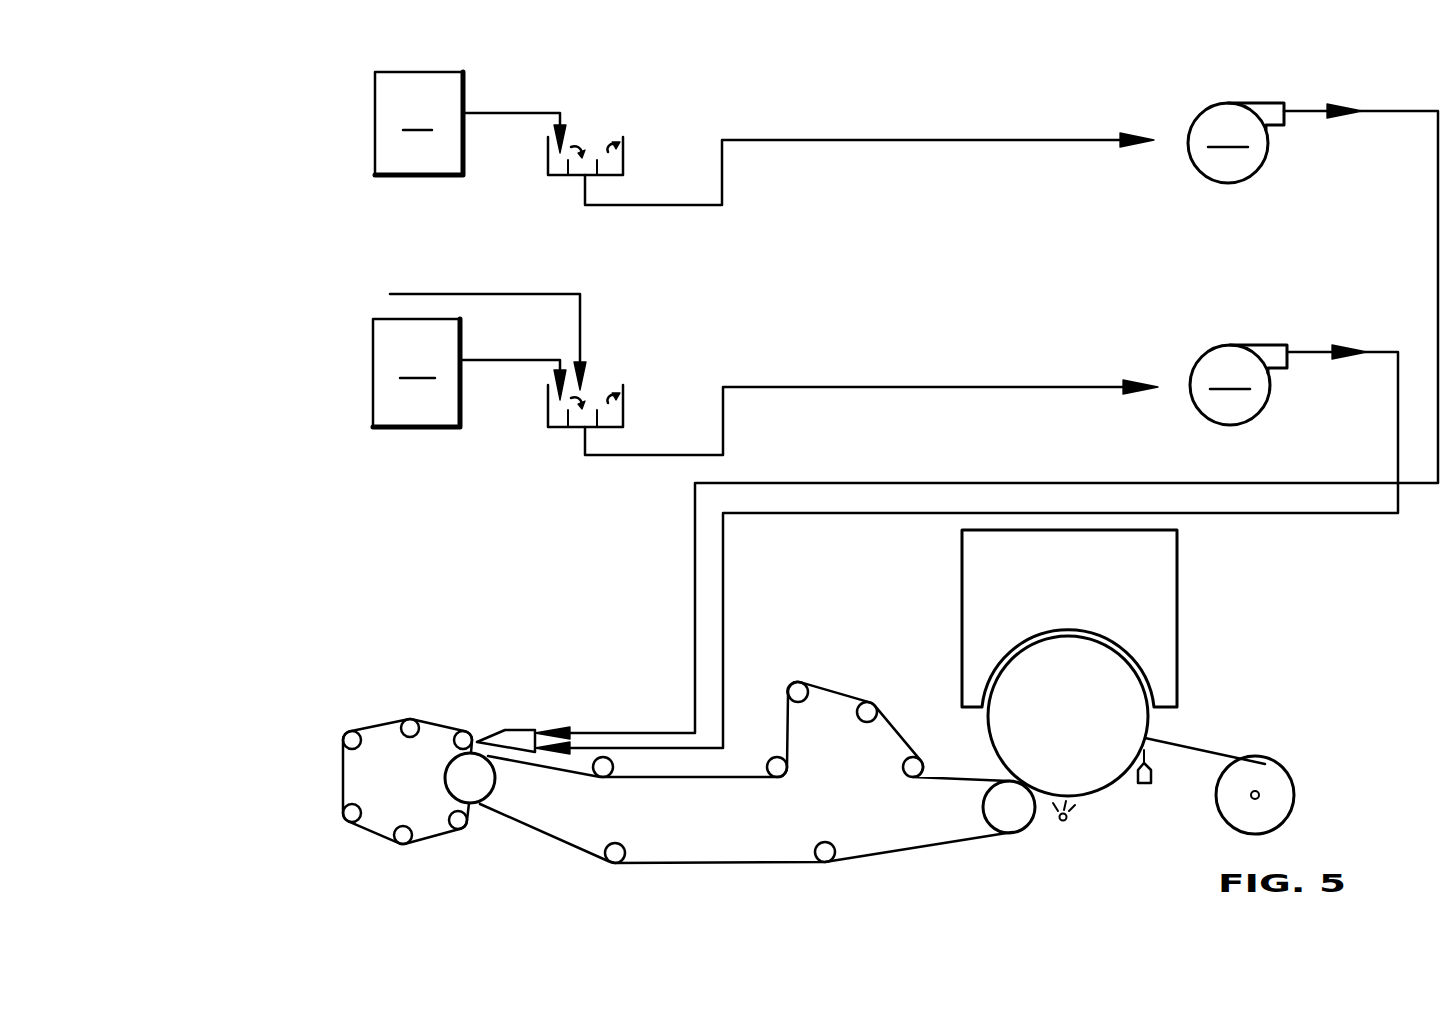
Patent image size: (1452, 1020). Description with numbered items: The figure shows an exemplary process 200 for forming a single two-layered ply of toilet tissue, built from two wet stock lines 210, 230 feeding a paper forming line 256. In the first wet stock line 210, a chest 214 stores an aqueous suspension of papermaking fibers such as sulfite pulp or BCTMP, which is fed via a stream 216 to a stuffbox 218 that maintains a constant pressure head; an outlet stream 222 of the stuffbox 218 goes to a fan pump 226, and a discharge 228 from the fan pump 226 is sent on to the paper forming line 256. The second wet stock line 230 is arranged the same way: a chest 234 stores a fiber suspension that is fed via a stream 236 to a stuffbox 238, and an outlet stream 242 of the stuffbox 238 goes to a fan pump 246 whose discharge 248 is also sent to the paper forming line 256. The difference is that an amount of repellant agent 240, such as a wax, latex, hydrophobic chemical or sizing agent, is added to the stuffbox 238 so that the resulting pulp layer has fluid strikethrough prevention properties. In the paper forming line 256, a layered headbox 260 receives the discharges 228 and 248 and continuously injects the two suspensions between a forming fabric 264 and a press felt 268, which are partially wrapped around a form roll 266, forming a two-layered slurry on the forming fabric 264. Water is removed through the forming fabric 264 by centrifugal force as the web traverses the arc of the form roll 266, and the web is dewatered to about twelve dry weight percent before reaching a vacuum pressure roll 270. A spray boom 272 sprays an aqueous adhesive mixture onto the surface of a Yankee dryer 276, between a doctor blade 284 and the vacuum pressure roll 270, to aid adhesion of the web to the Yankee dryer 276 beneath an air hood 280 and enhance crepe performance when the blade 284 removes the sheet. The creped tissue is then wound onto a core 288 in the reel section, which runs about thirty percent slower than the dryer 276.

The process 200 is at (264, 70).
The wet stock line 210 is at (328, 118).
The chest 214 is at (375, 155).
The stream 216 is at (498, 113).
The stuffbox 218 is at (548, 163).
The outlet stream 222 is at (668, 205).
The fan pump 226 is at (1232, 183).
The discharge 228 is at (1303, 110).
The wet stock line 230 is at (306, 352).
The chest 234 is at (373, 407).
The stream 236 is at (497, 360).
The stuffbox 238 is at (548, 410).
The repellant agent 240 is at (581, 328).
The outlet stream 242 is at (663, 455).
The fan pump 246 is at (1222, 424).
The discharge 248 is at (1313, 352).
The paper forming line 256 is at (243, 755).
The layered headbox 260 is at (520, 730).
The forming fabric 264 is at (437, 720).
The form roll 266 is at (445, 780).
The press felt 268 is at (533, 835).
The vacuum pressure roll 270 is at (983, 807).
The spray boom 272 is at (1063, 822).
The Yankee dryer 276 is at (1088, 726).
The air hood 280 is at (1088, 576).
The doctor blade 284 is at (1144, 783).
The core 288 is at (1258, 792).